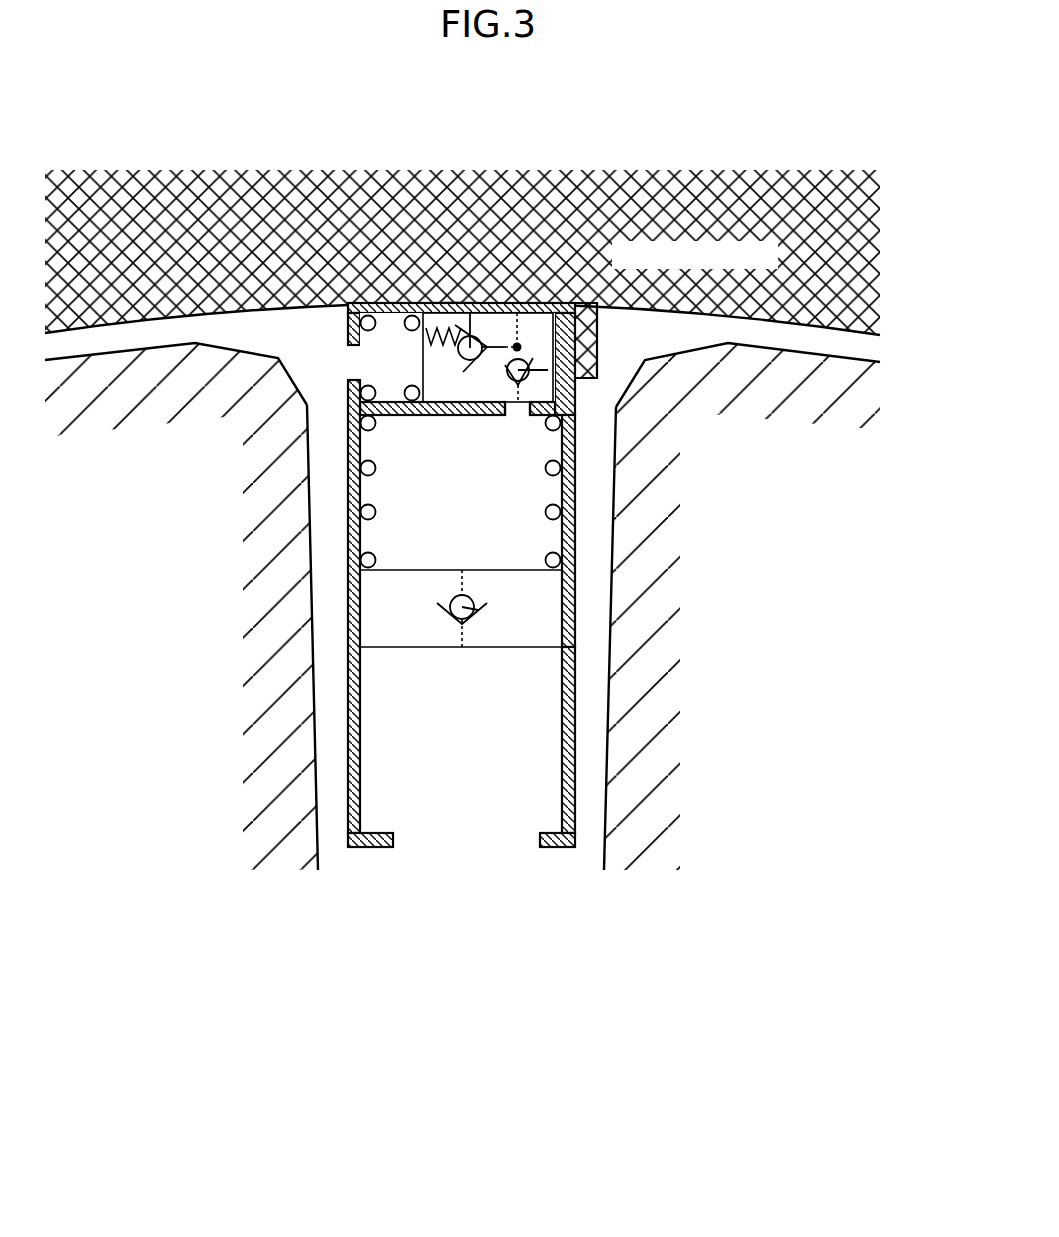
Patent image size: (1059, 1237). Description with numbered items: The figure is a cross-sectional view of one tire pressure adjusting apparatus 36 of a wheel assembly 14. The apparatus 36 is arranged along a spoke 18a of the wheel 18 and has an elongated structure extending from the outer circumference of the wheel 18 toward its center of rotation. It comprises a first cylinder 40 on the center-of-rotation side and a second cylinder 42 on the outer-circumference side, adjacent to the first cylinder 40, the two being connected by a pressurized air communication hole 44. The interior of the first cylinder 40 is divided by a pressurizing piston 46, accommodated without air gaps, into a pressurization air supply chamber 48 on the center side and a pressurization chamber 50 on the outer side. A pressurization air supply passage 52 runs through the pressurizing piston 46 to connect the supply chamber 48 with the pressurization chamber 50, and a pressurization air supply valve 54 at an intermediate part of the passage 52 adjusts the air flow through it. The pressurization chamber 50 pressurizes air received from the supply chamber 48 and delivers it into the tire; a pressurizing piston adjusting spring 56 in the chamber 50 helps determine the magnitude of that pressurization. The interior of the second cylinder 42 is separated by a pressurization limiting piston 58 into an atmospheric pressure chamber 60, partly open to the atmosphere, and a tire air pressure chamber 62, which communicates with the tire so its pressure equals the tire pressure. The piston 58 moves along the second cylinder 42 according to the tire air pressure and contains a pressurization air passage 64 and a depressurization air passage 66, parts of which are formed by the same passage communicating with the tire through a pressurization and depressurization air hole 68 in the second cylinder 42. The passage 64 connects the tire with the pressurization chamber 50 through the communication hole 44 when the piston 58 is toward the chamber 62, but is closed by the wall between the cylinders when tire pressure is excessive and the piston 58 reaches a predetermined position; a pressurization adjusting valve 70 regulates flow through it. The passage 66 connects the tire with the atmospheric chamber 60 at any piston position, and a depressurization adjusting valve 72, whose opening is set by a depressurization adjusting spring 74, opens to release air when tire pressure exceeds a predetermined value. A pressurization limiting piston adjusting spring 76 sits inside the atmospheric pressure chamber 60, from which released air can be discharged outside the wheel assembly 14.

The wheel assembly 14 is at (462, 592).
The wheel 18 is at (462, 606).
The spoke 18a is at (316, 748).
The tire pressure adjusting apparatus 36 is at (378, 862).
The first cylinder 40 is at (466, 542).
The second cylinder 42 is at (465, 306).
The pressurized air communication hole 44 is at (518, 411).
The pressurizing piston 46 is at (550, 605).
The pressurization air supply chamber 48 is at (552, 735).
The pressurization chamber 50 is at (530, 492).
The pressurization air supply passage 52 is at (460, 585).
The pressurization air supply valve 54 is at (472, 600).
The pressurizing piston adjusting spring 56 is at (355, 552).
The pressurization limiting piston 58 is at (456, 406).
The atmospheric pressure chamber 60 is at (358, 362).
The tire air pressure chamber 62 is at (582, 365).
The pressurization air passage 64 is at (517, 384).
The depressurization air passage 66 is at (507, 345).
The pressurization and depressurization air hole 68 is at (521, 308).
The pressurization adjusting valve 70 is at (577, 382).
The depressurization adjusting valve 72 is at (470, 336).
The depressurization adjusting spring 74 is at (476, 308).
The pressurization limiting piston adjusting spring 76 is at (366, 315).